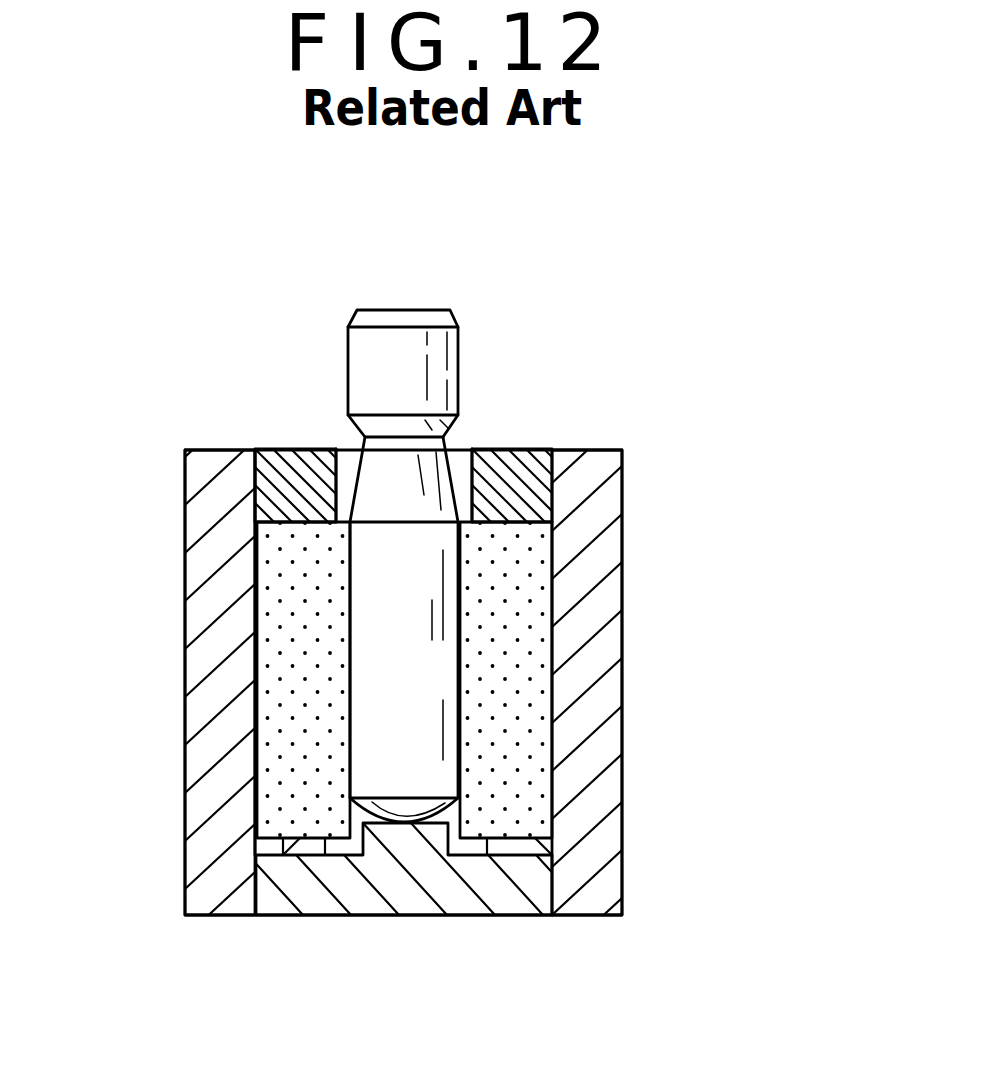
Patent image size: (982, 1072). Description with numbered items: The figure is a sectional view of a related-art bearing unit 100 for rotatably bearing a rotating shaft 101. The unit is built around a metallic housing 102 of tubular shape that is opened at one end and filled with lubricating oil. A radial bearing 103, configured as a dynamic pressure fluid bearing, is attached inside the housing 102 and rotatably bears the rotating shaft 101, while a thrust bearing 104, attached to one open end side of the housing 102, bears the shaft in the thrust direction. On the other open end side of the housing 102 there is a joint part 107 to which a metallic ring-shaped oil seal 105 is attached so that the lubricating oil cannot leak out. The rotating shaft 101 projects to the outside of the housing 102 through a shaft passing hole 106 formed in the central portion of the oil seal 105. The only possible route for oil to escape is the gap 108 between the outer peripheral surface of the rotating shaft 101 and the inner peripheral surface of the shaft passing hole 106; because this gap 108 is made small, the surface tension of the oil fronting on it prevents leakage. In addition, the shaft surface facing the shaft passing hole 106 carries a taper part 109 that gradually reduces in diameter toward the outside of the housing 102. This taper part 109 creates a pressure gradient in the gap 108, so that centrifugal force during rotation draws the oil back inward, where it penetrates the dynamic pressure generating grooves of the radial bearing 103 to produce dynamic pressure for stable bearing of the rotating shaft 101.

The bearing unit 100 is at (653, 568).
The rotating shaft 101 is at (395, 355).
The housing 102 is at (588, 815).
The radial bearing 103 is at (520, 648).
The thrust bearing 104 is at (416, 893).
The oil seal 105 is at (528, 448).
The shaft passing hole 106 is at (463, 473).
The joint part 107 is at (255, 490).
The gap 108 is at (348, 455).
The taper part 109 is at (310, 447).